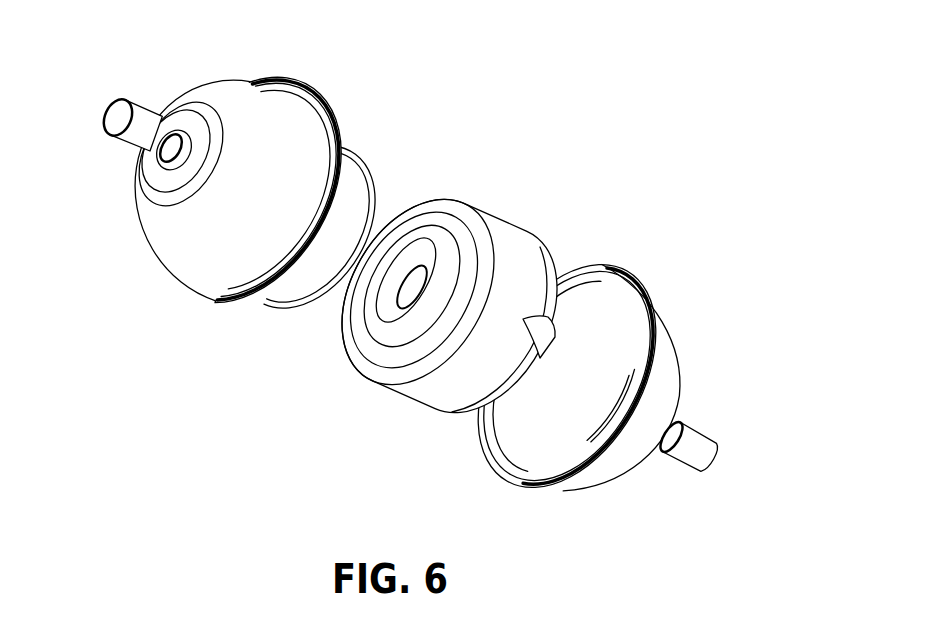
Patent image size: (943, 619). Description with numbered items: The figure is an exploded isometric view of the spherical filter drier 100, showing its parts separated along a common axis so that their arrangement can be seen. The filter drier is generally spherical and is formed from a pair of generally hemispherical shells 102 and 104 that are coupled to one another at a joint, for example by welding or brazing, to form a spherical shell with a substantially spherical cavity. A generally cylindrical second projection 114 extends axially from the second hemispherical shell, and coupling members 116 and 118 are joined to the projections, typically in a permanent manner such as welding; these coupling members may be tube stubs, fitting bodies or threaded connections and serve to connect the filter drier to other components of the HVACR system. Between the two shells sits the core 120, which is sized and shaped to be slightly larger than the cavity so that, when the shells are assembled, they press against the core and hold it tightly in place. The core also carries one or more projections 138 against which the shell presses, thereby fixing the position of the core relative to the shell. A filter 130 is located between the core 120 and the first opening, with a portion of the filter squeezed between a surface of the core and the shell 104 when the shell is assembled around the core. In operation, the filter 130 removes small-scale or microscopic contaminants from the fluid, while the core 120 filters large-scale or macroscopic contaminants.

The spherical filter drier 100 is at (425, 272).
The hemispherical shell 102 is at (667, 337).
The hemispherical shell 104 is at (280, 98).
The second projection 114 is at (172, 164).
The coupling member 116 is at (690, 437).
The coupling member 118 is at (143, 120).
The core 120 is at (512, 237).
The filter 130 is at (357, 180).
The projection 138 is at (541, 337).